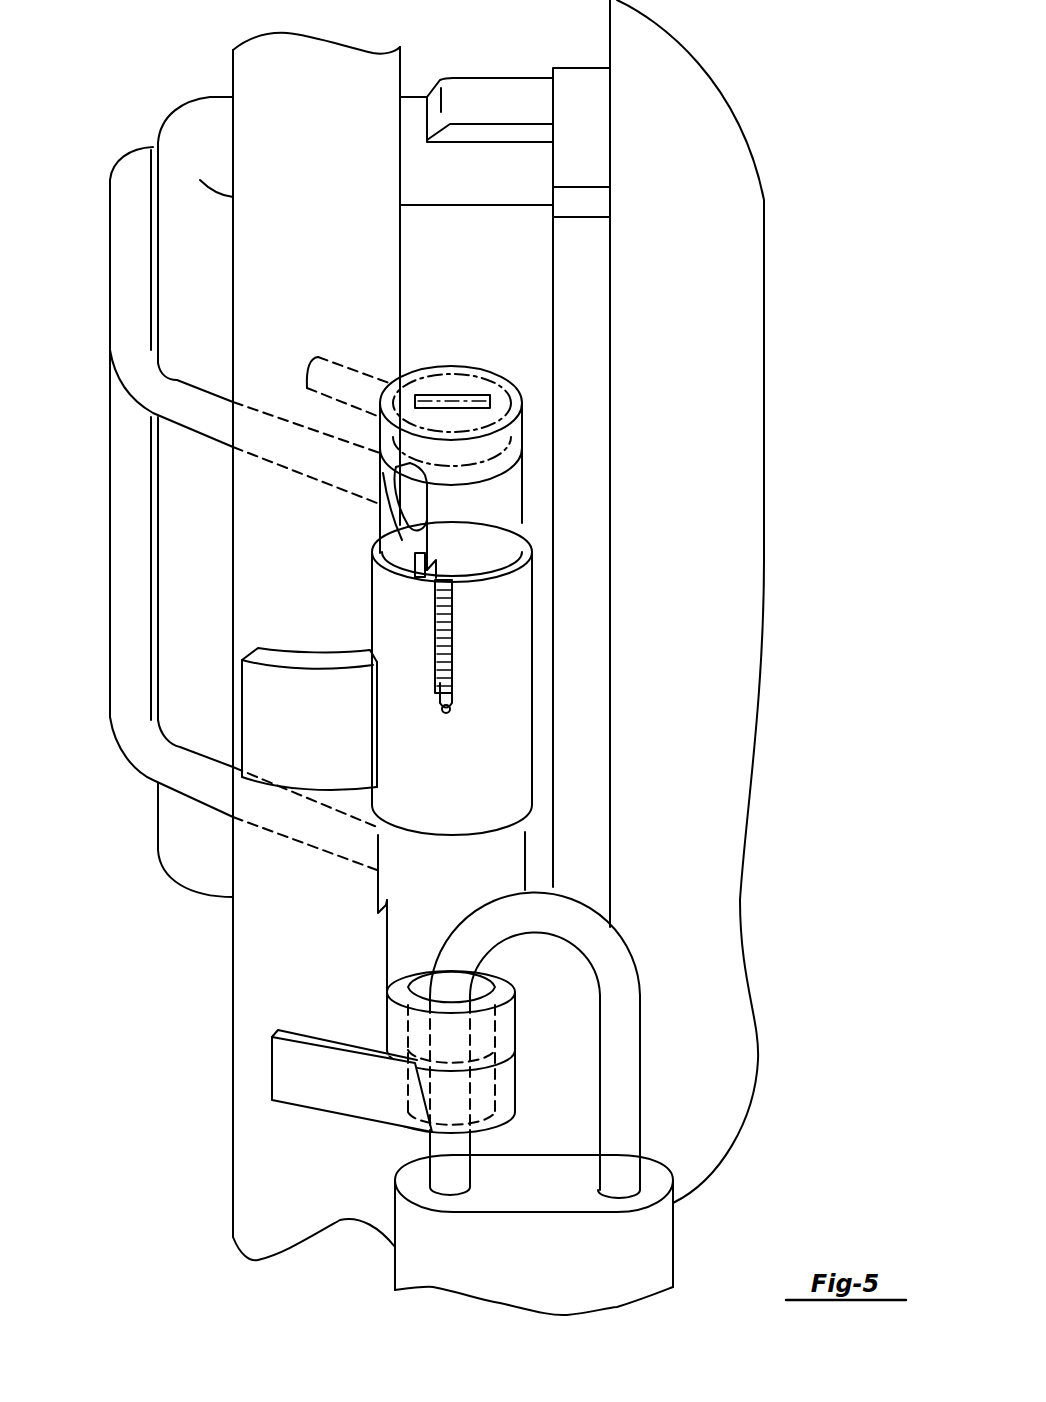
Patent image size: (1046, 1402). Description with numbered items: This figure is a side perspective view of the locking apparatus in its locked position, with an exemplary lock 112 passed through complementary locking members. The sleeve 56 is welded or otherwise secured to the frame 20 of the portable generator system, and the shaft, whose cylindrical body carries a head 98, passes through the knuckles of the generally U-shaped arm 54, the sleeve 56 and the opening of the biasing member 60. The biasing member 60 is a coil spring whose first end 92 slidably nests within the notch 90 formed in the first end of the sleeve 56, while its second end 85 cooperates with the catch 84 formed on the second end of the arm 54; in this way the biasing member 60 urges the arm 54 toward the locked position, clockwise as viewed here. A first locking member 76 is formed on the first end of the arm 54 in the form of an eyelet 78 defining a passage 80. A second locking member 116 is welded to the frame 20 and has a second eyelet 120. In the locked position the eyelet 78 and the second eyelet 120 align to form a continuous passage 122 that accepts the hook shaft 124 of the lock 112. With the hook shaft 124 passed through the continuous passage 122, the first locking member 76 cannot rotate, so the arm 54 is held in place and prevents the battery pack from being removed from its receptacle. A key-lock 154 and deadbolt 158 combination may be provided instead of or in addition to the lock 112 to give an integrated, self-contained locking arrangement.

The frame 20 is at (243, 132).
The arm 54 is at (128, 518).
The sleeve 56 is at (485, 387).
The biasing member 60 is at (440, 643).
The first locking member 76 is at (403, 938).
The eyelet 78 is at (412, 978).
The passage 80 is at (408, 1012).
The catch 84 is at (420, 520).
The second end of biasing member 85 is at (425, 558).
The notch 90 is at (447, 587).
The first end of biasing member 92 is at (452, 703).
The head 98 is at (387, 443).
The lock 112 is at (667, 1250).
The second locking member 116 is at (283, 1083).
The second eyelet 120 is at (407, 1100).
The continuous passage 122 is at (423, 955).
The hook shaft 124 is at (627, 1023).
The key-lock 154 is at (443, 396).
The deadbolt 158 is at (343, 357).